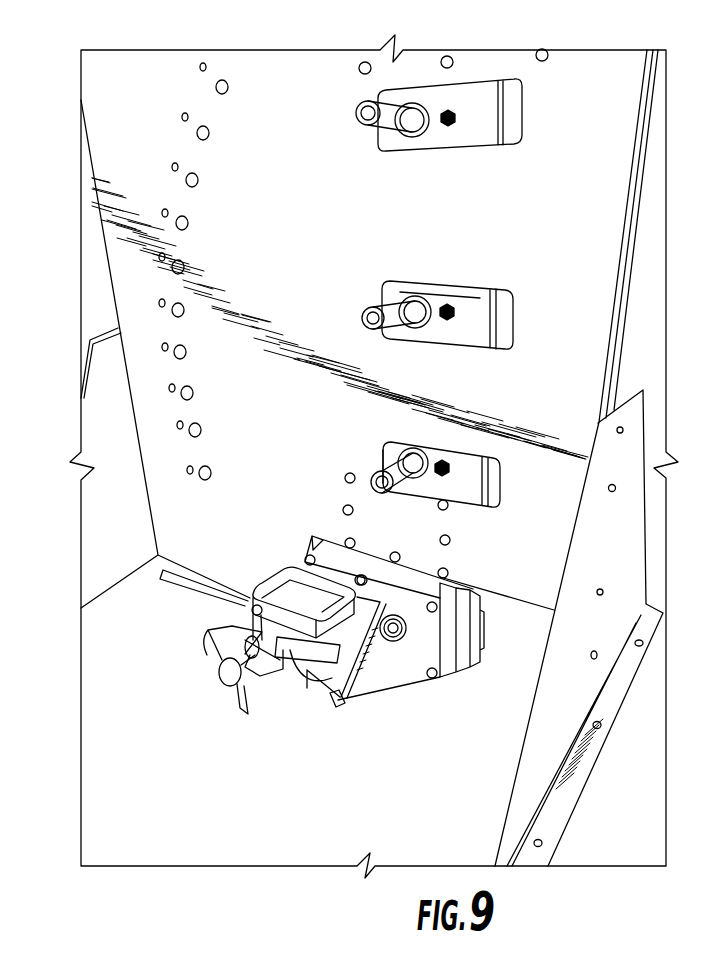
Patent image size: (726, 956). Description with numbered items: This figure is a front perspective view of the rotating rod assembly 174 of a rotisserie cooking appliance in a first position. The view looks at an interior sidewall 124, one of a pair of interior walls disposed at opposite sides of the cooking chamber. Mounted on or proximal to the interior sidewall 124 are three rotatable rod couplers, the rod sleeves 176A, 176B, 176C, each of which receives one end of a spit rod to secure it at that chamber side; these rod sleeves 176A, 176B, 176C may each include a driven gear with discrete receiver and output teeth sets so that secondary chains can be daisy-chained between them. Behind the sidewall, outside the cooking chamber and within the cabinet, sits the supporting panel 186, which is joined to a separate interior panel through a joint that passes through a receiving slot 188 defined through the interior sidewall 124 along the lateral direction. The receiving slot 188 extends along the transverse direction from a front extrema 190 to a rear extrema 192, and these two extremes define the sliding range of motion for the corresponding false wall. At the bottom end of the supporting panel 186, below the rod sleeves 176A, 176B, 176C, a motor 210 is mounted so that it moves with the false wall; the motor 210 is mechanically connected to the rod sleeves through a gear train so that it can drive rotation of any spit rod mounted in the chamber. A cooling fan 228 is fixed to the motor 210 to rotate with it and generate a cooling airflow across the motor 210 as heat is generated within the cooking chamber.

The interior sidewall 124 is at (132, 84).
The rotating rod assembly 174 is at (363, 765).
The rod sleeve 176A is at (368, 484).
The rod sleeve 176B is at (364, 314).
The rod sleeve 176C is at (358, 108).
The supporting panel 186 is at (473, 312).
The receiving slot 188 is at (512, 131).
The front extrema 190 is at (505, 498).
The rear extrema 192 is at (378, 450).
The motor 210 is at (333, 620).
The cooling fan 228 is at (208, 657).